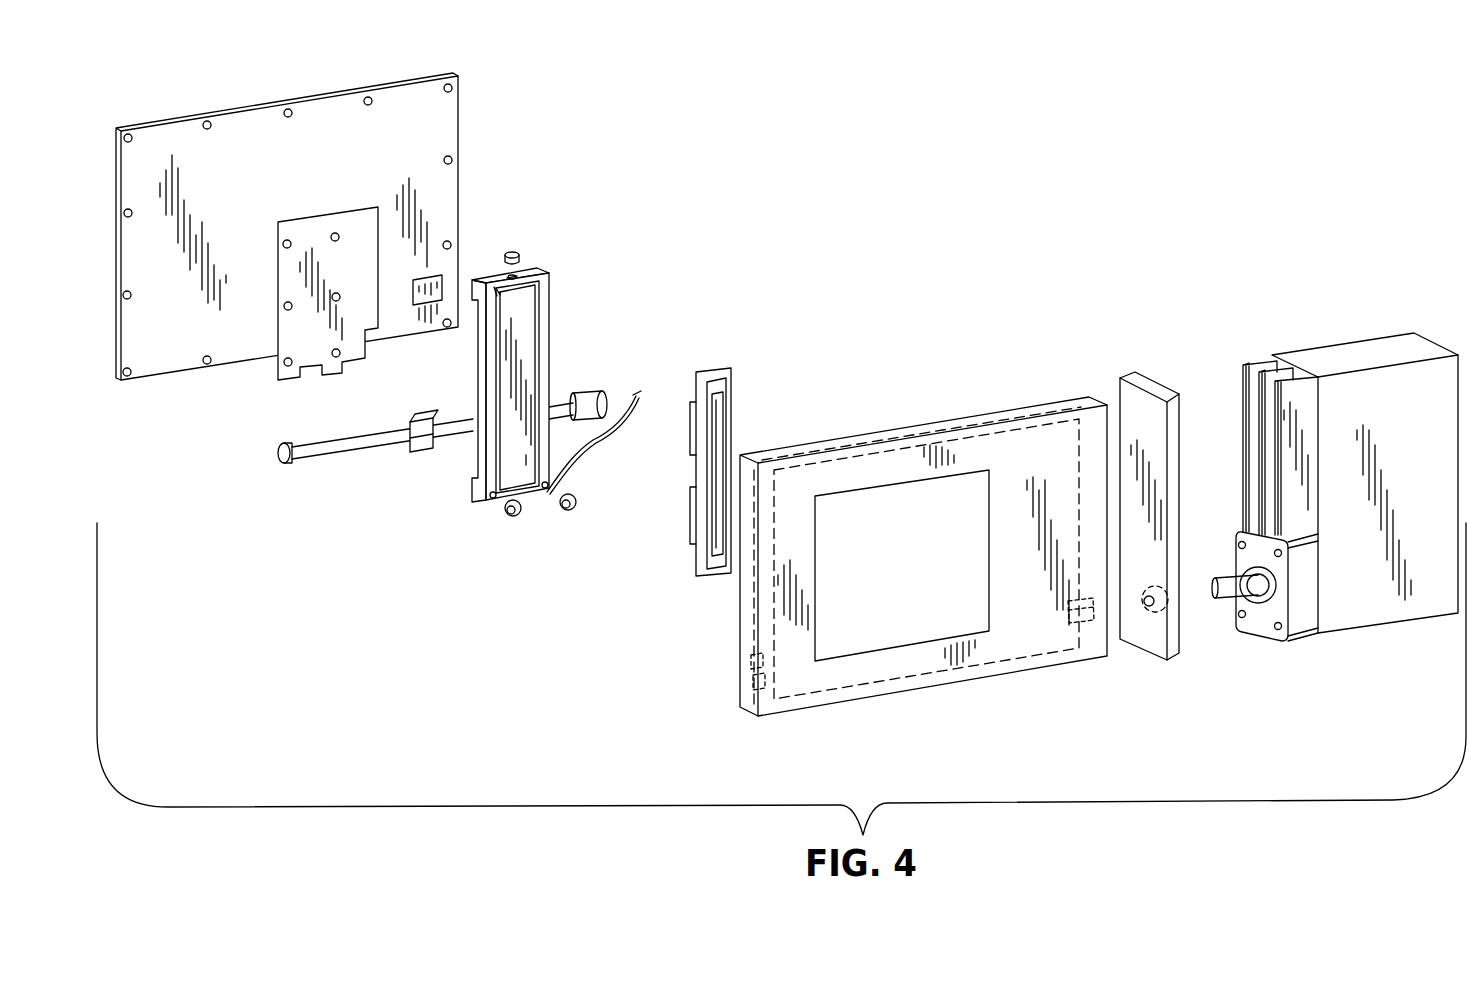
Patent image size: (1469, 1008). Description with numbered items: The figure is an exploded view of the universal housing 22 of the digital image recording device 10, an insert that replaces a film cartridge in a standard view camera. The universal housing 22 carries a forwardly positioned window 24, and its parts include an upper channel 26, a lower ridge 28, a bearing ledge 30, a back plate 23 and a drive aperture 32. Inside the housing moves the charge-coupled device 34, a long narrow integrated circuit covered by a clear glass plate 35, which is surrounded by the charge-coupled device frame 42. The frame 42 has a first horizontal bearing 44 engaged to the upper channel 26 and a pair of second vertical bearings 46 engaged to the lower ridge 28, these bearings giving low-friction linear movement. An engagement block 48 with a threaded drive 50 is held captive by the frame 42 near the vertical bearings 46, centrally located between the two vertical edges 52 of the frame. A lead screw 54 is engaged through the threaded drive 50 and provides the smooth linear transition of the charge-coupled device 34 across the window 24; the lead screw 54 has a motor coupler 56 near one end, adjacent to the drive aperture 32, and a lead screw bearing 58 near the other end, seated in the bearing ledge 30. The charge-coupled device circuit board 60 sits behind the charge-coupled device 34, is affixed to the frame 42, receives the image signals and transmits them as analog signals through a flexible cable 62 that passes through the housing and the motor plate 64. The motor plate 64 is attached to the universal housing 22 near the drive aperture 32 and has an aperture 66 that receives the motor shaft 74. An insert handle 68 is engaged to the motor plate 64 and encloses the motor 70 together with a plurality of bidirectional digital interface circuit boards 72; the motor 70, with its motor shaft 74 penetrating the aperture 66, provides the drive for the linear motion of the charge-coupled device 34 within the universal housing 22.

The digital image recording device 10 is at (1069, 298).
The universal housing 22 is at (856, 436).
The back plate 23 is at (252, 122).
The window 24 is at (890, 617).
The upper channel 26 is at (1038, 407).
The lower ridge 28 is at (991, 668).
The bearing ledge 30 is at (745, 709).
The drive aperture 32 is at (1093, 627).
The charge-coupled device 34 is at (714, 368).
The clear glass plate 35 is at (721, 390).
The charge-coupled device frame 42 is at (522, 280).
The first horizontal bearing 44 is at (507, 252).
The second vertical bearings 46 is at (513, 518).
The engagement block 48 is at (420, 413).
The threaded drive 50 is at (430, 440).
The vertical edges 52 is at (553, 290).
The lead screw 54 is at (357, 453).
The motor coupler 56 is at (587, 393).
The lead screw bearing 58 is at (278, 445).
The charge-coupled device circuit board 60 is at (355, 227).
The flexible cable 62 is at (617, 430).
The motor plate 64 is at (1149, 398).
The aperture 66 is at (1145, 609).
The insert handle 68 is at (1386, 348).
The motor 70 is at (1301, 617).
The bidirectional digital interface circuit boards 72 is at (1292, 372).
The motor shaft 74 is at (1234, 599).